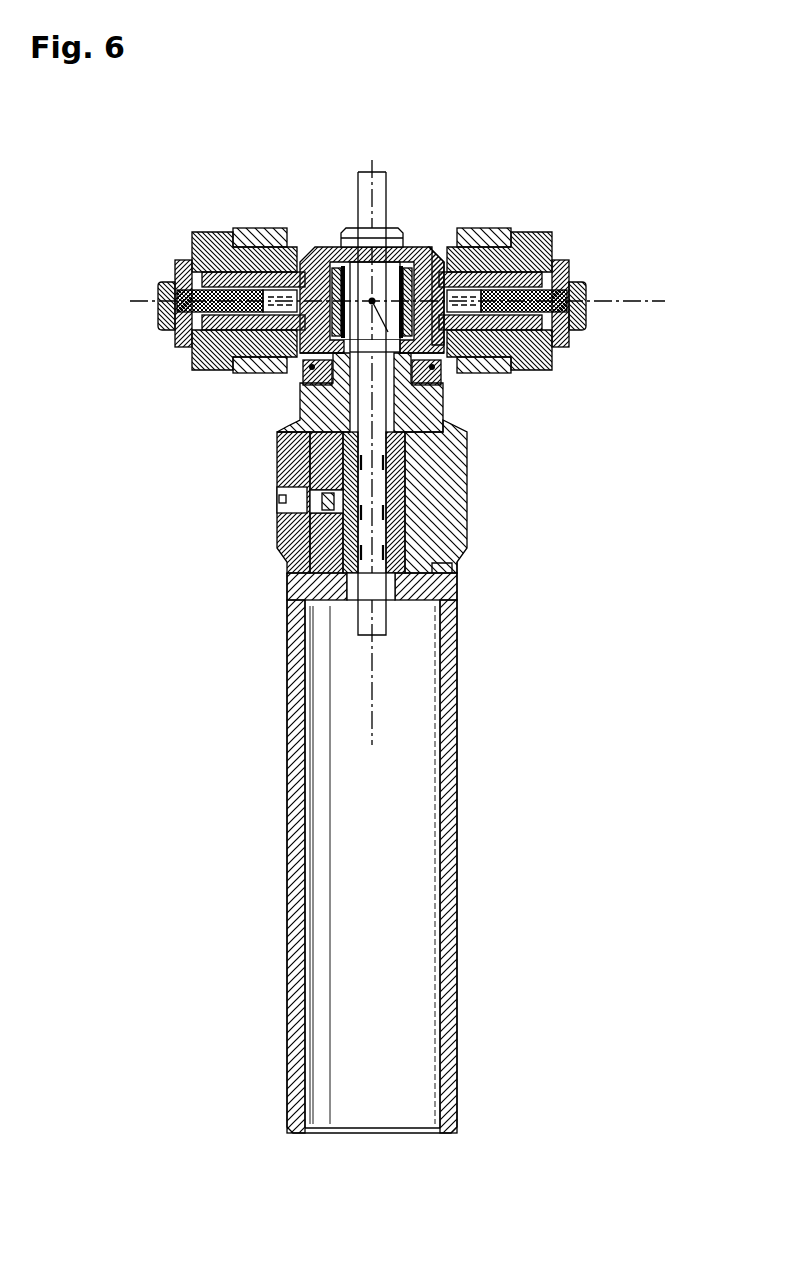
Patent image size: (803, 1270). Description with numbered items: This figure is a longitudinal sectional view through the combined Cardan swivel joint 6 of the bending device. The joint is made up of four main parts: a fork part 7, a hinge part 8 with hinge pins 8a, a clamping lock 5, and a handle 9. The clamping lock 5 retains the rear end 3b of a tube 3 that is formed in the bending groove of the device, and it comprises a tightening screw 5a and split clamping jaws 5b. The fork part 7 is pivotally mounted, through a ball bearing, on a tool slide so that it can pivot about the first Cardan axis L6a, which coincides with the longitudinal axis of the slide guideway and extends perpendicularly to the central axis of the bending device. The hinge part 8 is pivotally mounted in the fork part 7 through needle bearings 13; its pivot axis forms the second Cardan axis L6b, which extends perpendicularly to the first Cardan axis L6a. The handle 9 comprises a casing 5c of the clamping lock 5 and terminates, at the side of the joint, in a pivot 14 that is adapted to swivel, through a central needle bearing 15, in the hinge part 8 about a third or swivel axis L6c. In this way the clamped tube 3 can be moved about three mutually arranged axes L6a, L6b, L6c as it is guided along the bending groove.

The tube 3 is at (358, 187).
The rear end of tube 3b is at (358, 623).
The clamping lock 5 is at (290, 565).
The tightening screw 5a is at (285, 507).
The split clamping jaws 5b is at (296, 590).
The casing 5c is at (458, 452).
The Cardan swivel joint 6 is at (222, 228).
The fork part 7 is at (212, 372).
The hinge part 8 is at (322, 250).
The hinge pins 8a is at (262, 232).
The handle 9 is at (460, 932).
The needle bearings 13 is at (490, 262).
The pivot 14 is at (363, 248).
The central needle bearing 15 is at (395, 270).
The first Cardan axis L6a is at (443, 385).
The second Cardan axis L6b is at (628, 301).
The swivel axis L6c is at (372, 735).